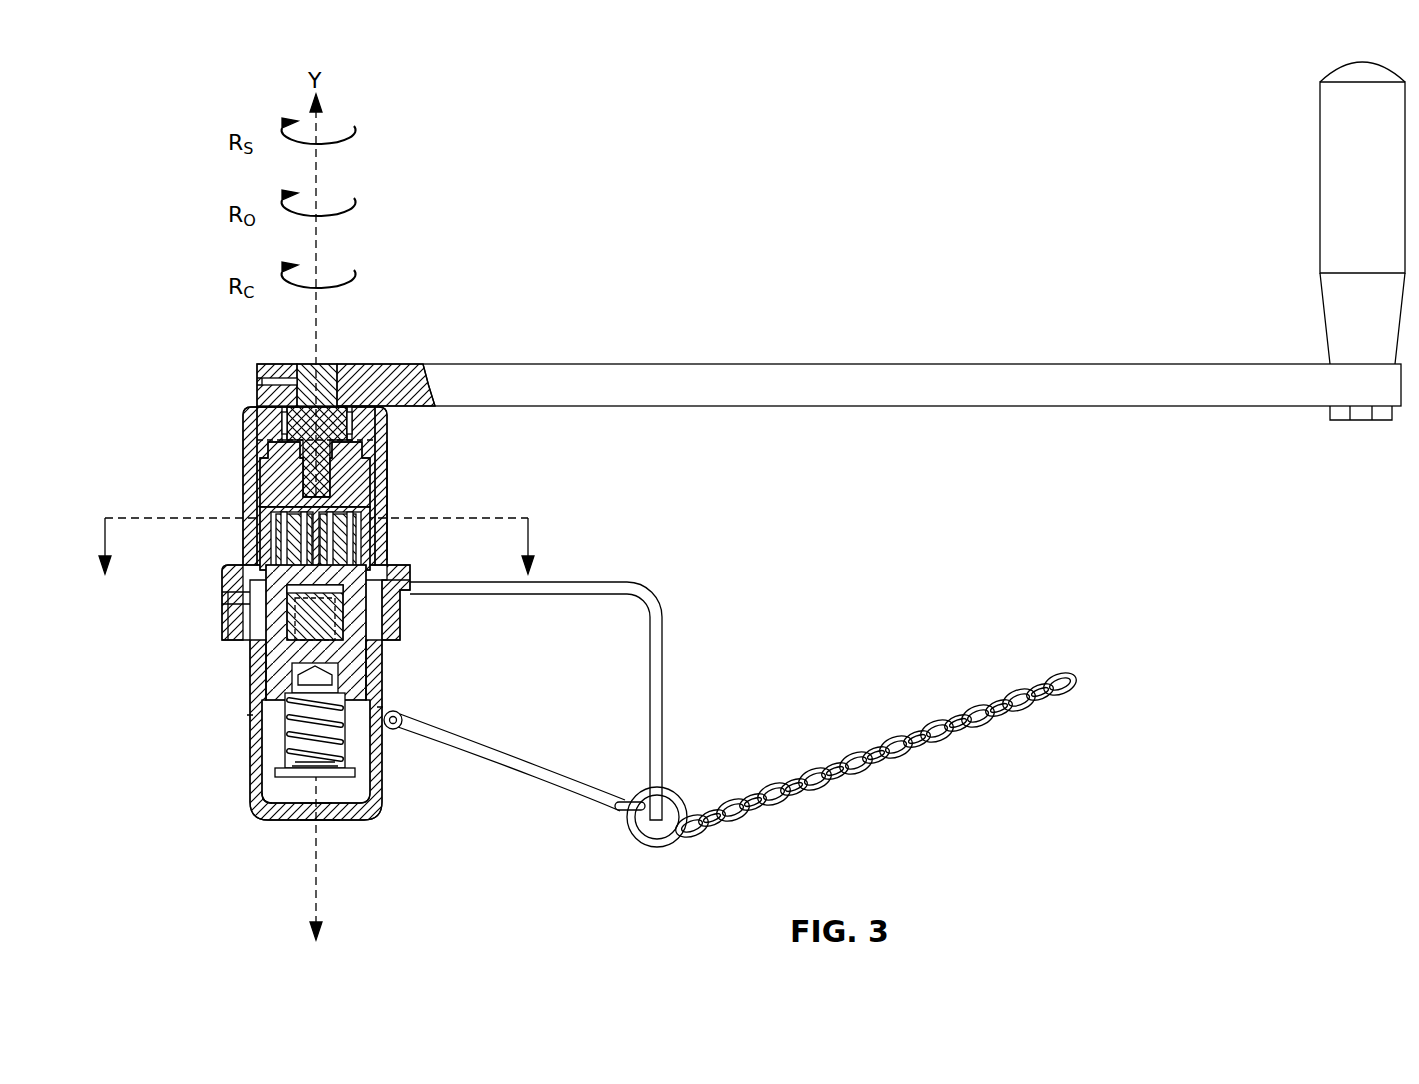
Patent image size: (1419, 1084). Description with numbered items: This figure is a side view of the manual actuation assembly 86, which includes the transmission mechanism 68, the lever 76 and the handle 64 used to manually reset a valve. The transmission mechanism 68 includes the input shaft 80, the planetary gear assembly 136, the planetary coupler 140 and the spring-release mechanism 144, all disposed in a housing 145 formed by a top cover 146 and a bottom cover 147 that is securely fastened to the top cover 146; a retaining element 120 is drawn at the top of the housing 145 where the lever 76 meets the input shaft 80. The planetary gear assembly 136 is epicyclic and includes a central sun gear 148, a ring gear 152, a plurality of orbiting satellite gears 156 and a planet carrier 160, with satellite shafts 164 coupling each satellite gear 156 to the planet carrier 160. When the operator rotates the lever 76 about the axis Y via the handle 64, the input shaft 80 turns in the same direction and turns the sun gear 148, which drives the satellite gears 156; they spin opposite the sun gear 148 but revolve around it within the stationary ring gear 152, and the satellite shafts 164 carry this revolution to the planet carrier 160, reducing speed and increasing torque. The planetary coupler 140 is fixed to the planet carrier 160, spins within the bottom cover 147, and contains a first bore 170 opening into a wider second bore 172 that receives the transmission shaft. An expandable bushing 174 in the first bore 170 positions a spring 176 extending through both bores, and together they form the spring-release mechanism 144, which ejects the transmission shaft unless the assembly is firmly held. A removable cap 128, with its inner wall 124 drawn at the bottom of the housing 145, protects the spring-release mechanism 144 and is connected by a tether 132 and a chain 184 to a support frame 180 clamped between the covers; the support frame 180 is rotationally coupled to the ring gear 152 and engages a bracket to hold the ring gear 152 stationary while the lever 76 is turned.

The handle 64 is at (1320, 160).
The transmission mechanism 68 is at (405, 437).
The lever 76 is at (1040, 362).
The input shaft 80 is at (330, 363).
The manual actuation assembly 86 is at (194, 99).
The cap 120 is at (248, 415).
The inner bottom wall 124 is at (263, 808).
The removable cap 128 is at (343, 822).
The cable 132 is at (535, 772).
The planetary gear assembly 136 is at (388, 477).
The planetary coupler 140 is at (272, 667).
The spring-release mechanism 144 is at (312, 785).
The housing 145 is at (224, 586).
The top cover 146 is at (243, 428).
The bottom cover 147 is at (248, 703).
The sun gear 148 is at (262, 470).
The ring gear 152 is at (258, 500).
The satellite gears 156 is at (272, 560).
The planet carrier 160 is at (277, 622).
The satellite shafts 164 is at (357, 518).
The first bore 170 is at (340, 670).
The second bore 172 is at (340, 748).
The expandable bushing 174 is at (352, 624).
The spring 176 is at (340, 722).
The support frame 180 is at (590, 582).
The chain 184 is at (912, 720).